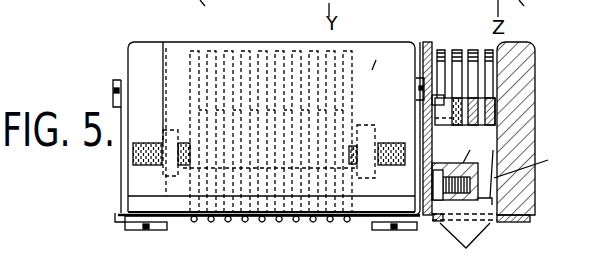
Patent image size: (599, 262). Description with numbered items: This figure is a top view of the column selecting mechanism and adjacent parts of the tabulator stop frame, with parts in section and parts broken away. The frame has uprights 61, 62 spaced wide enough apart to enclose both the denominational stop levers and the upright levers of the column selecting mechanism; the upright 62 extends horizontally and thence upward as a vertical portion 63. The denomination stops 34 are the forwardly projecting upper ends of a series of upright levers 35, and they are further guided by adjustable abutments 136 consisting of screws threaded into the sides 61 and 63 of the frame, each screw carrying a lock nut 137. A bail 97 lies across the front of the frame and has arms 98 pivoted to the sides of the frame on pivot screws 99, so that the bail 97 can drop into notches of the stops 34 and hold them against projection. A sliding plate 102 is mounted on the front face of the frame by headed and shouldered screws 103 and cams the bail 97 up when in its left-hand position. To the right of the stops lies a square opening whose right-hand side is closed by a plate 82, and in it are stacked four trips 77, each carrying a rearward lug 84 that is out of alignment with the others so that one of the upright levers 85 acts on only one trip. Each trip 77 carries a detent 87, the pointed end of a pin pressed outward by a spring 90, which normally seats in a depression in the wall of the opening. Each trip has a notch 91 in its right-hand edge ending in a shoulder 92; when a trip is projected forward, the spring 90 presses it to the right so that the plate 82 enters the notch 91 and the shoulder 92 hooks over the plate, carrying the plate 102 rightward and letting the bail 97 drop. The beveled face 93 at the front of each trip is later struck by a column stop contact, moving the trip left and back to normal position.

The upright lever 35 is at (214, 12).
The upright 61 is at (162, 70).
The denomination stop 34 is at (232, 110).
The lock nut 137 is at (160, 135).
The adjustable abutment 136 is at (183, 142).
The pivot screw 99 is at (116, 81).
The bail arm 98 is at (125, 164).
The headed and shouldered screw 103 is at (142, 226).
The bail 97 is at (193, 218).
The vertical portion 63 is at (388, 58).
The lug 84 is at (442, 103).
The upright lever 85 is at (487, 48).
The upright 62 is at (527, 13).
The plate 82 is at (531, 110).
The sliding plate 102 is at (523, 228).
The detent 87 is at (440, 165).
The trip 77 is at (471, 146).
The spring 90 is at (472, 168).
The notch 91 is at (534, 163).
The shoulder 92 is at (488, 206).
The beveled face 93 is at (480, 238).